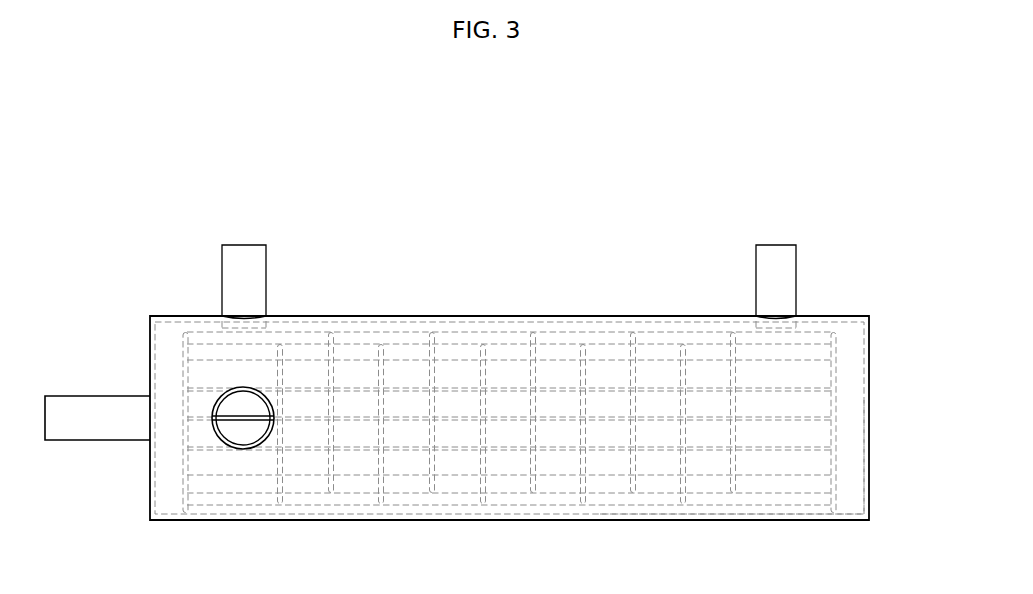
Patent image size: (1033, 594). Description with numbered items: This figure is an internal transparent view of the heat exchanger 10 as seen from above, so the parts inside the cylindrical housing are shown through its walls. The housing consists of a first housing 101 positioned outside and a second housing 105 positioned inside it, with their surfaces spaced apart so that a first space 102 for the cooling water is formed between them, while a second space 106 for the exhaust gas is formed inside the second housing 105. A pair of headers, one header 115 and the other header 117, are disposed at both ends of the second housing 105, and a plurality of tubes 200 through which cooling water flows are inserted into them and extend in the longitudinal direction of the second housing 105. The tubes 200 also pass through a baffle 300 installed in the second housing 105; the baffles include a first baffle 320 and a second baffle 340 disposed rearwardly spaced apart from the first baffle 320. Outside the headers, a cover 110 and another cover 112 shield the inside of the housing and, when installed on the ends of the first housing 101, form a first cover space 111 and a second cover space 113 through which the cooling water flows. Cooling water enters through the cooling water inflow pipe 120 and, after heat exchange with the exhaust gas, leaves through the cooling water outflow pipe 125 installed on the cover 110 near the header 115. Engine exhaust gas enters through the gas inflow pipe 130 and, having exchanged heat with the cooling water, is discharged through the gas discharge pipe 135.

The heat exchanger 10 is at (541, 186).
The first housing 101 is at (540, 520).
The first space 102 is at (735, 511).
The second housing 105 is at (636, 505).
The second space 106 is at (787, 498).
The cover 110 is at (150, 492).
The first cover space 111 is at (165, 468).
The other cover 112 is at (866, 474).
The second cover space 113 is at (852, 366).
The header 115 is at (186, 495).
The other header 117 is at (836, 405).
The cooling water inflow pipe 120 is at (243, 252).
The cooling water outflow pipe 125 is at (57, 401).
The gas inflow pipe 130 is at (217, 402).
The gas discharge pipe 135 is at (778, 252).
The tube 200 is at (238, 468).
The baffle 300 is at (407, 277).
The first baffle 320 is at (283, 360).
The second baffle 340 is at (333, 360).